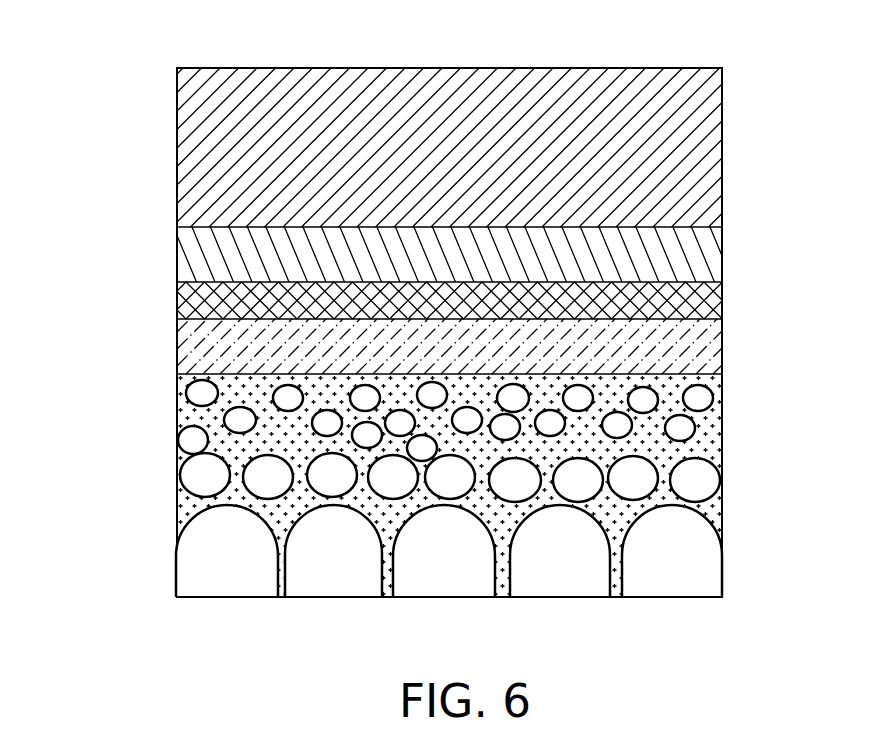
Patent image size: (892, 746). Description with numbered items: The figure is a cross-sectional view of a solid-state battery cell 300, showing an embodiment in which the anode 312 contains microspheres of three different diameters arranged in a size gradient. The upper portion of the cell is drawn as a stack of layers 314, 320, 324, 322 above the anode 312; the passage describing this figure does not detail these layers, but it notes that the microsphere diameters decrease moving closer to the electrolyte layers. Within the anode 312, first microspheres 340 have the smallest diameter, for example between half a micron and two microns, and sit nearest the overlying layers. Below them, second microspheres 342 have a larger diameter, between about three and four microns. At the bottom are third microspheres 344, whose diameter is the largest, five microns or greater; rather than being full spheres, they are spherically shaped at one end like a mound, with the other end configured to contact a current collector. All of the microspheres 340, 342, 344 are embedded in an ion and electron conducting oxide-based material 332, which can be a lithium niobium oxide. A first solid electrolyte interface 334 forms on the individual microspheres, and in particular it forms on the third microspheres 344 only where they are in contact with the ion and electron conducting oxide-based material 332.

The display device 300 is at (108, 70).
The cover layer 314 is at (722, 150).
The polarizing layer 320 is at (722, 253).
The adhesive layer 324 is at (722, 303).
The light control layer 322 is at (722, 352).
The anode 312 is at (722, 408).
The ion and electron conducting oxide-based material 332 is at (207, 420).
The first microspheres 340 is at (697, 395).
The second microspheres 342 is at (208, 478).
The first solid electrolyte interface 334 is at (710, 513).
The third microspheres 344 is at (230, 550).